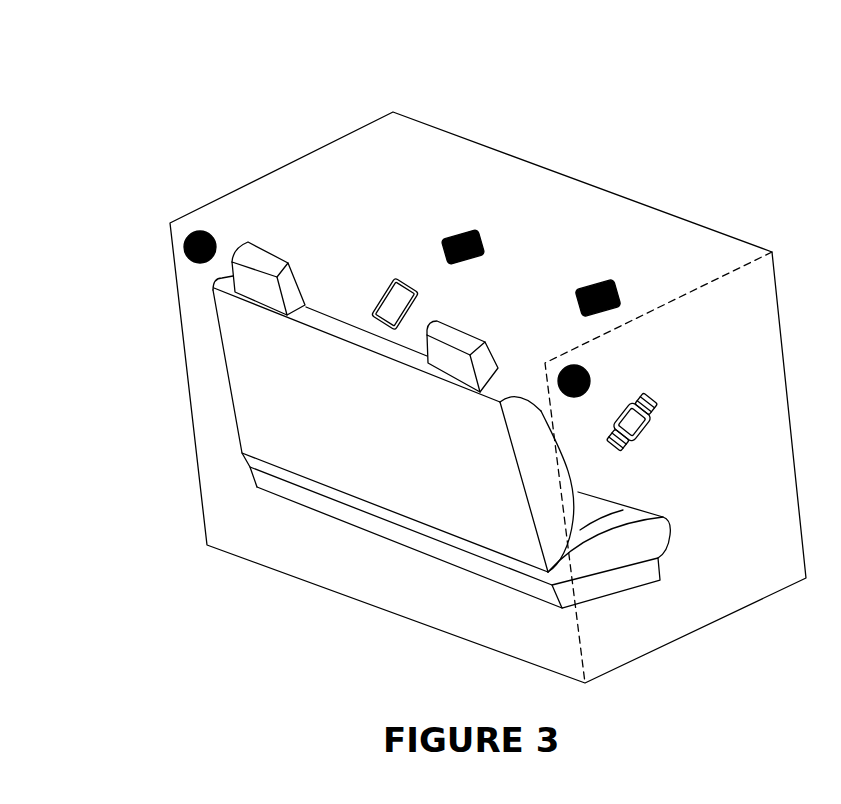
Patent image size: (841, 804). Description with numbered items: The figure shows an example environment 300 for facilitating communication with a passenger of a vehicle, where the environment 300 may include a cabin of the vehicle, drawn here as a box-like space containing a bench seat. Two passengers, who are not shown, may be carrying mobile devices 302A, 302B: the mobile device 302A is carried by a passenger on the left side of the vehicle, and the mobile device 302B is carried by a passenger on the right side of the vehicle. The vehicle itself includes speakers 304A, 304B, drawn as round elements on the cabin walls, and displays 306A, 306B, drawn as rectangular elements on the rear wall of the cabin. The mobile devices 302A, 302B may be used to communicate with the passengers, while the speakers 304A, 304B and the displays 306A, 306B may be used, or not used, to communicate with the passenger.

The environment 300 is at (688, 73).
The mobile device 302A is at (393, 282).
The mobile device 302B is at (648, 441).
The speaker 304A is at (198, 232).
The speaker 304B is at (567, 394).
The display 306A is at (453, 231).
The display 306B is at (602, 285).